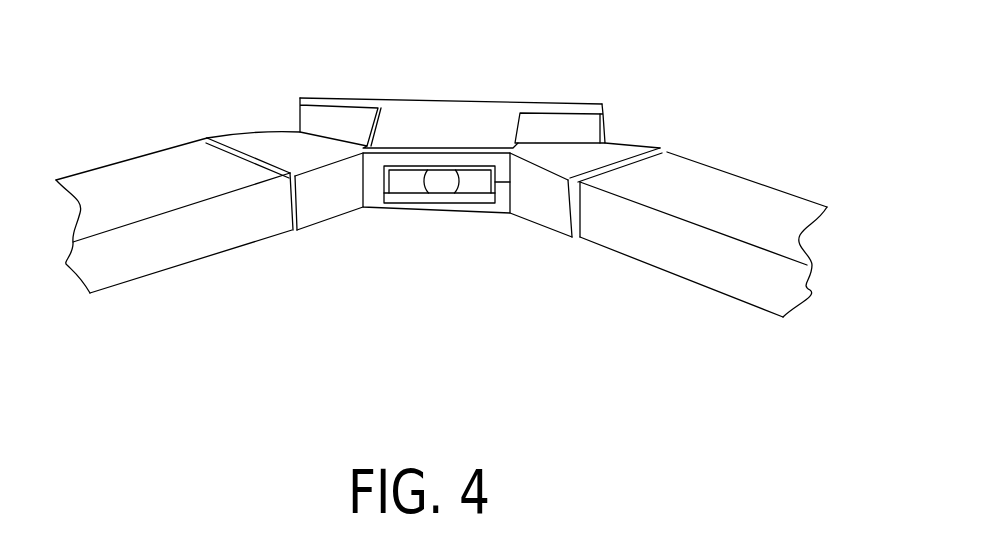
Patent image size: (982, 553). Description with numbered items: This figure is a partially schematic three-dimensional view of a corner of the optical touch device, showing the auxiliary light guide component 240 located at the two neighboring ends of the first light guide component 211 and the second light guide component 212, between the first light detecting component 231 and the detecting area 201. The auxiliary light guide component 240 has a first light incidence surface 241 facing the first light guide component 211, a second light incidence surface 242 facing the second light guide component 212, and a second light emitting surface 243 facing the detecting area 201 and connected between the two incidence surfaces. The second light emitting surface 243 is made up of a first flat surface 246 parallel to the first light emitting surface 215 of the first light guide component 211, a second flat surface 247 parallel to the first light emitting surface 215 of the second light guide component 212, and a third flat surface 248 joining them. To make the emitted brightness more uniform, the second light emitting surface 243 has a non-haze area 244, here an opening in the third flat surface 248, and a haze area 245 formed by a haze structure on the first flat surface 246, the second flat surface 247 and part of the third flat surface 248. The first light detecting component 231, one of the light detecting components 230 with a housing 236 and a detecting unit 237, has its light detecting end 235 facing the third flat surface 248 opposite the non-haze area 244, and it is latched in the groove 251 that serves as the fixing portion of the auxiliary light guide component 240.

The detecting area 201 is at (298, 348).
The first light guide component 211 is at (763, 210).
The second light guide component 212 is at (150, 168).
The first light emitting surface 215 is at (178, 250).
The light detecting component 230 is at (452, 75).
The first light detecting component 231 is at (501, 113).
The light detecting end 235 is at (431, 182).
The housing 236 is at (313, 104).
The detecting unit 237 is at (567, 178).
The auxiliary light guide component 240 is at (267, 152).
The first light incidence surface 241 is at (572, 221).
The second light incidence surface 242 is at (291, 203).
The second light emitting surface 243 is at (462, 273).
The non-haze area 244 is at (459, 196).
The haze area 245 is at (393, 243).
The first flat surface 246 is at (529, 197).
The second flat surface 247 is at (327, 199).
The third flat surface 248 is at (382, 200).
The groove 251 is at (370, 144).